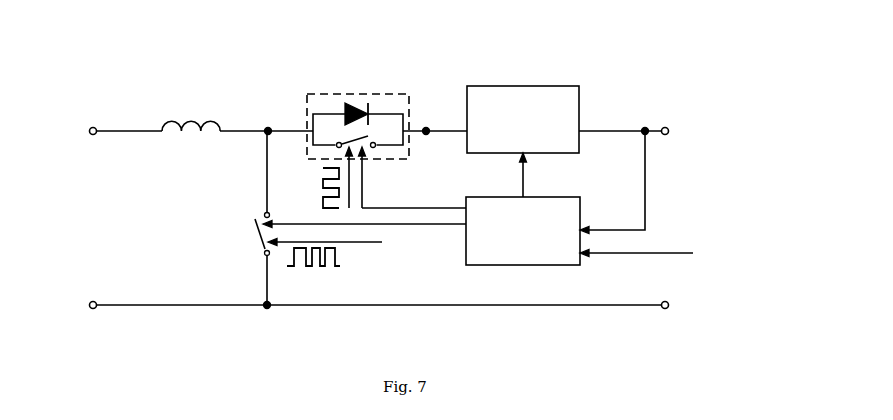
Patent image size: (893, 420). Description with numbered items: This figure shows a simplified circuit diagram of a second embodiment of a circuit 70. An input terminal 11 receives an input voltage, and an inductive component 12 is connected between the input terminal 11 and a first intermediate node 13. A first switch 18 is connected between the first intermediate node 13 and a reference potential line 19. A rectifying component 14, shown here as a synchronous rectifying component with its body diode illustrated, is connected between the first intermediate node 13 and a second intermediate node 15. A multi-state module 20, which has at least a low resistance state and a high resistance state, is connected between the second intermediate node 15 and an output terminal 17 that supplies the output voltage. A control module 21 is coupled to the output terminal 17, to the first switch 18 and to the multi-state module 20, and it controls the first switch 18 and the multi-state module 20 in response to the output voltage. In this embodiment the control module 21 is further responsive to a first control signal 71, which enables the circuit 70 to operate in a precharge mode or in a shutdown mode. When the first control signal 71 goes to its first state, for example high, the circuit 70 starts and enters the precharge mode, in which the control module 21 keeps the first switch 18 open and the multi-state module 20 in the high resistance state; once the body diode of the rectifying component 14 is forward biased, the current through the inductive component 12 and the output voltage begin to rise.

The input terminal 11 is at (93, 126).
The inductive component 12 is at (198, 121).
The first intermediate node 13 is at (268, 123).
The rectifying component 14 is at (406, 103).
The second intermediate node 15 is at (428, 128).
The output terminal 17 is at (662, 127).
The first switch 18 is at (258, 241).
The reference potential line 19 is at (181, 305).
The multi-state module 20 is at (556, 92).
The control module 21 is at (565, 202).
The circuit 70 is at (684, 98).
The first control signal 71 is at (650, 252).